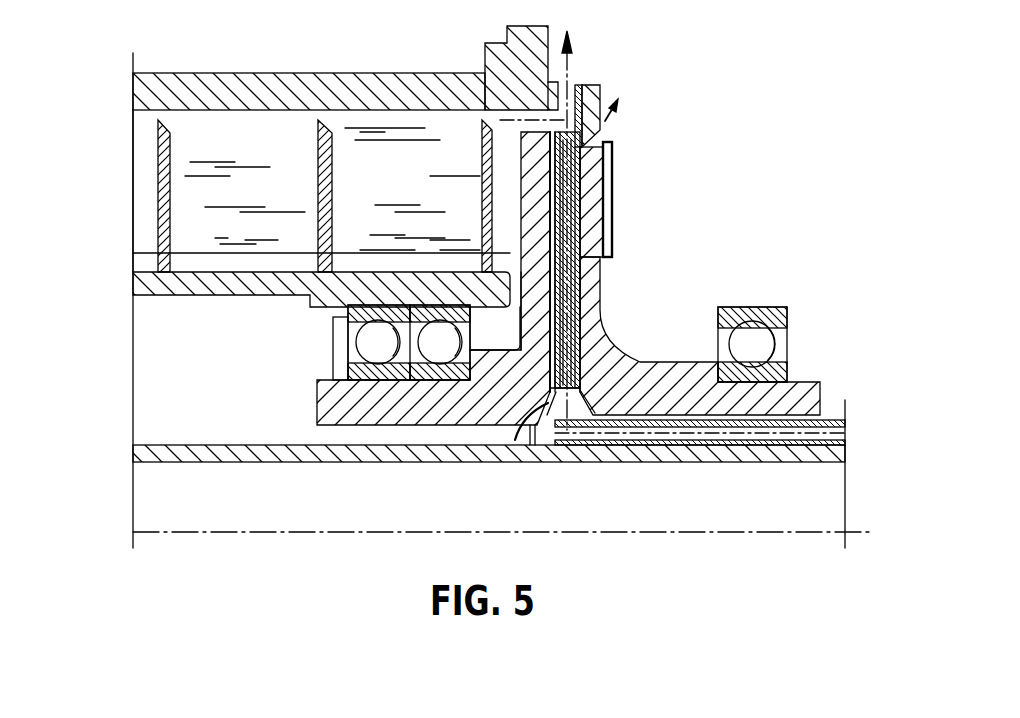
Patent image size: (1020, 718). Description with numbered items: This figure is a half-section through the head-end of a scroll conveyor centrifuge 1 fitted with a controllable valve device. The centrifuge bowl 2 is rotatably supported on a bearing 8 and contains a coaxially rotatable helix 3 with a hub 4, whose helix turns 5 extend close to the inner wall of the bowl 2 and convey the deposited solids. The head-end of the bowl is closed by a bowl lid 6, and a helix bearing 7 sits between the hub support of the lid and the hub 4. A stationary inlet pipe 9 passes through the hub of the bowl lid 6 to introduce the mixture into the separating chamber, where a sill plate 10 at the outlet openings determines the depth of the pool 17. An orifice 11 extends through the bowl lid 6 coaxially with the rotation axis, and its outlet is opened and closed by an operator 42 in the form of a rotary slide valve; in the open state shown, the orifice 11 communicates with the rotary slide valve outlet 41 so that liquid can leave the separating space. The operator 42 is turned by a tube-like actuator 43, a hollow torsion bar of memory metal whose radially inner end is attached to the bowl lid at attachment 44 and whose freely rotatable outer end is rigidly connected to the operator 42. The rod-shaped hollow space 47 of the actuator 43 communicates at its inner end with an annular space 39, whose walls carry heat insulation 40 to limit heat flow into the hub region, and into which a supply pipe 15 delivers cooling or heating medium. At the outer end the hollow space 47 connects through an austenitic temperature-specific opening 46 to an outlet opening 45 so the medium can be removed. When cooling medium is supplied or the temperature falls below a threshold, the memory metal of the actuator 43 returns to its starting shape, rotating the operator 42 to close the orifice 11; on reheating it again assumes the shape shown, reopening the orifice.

The scroll conveyor centrifuge 1 is at (743, 194).
The centrifuge bowl 2 is at (366, 83).
The helix 3 is at (157, 187).
The hub 4 is at (155, 282).
The helix turns 5 is at (165, 230).
The bowl lid 6 is at (683, 375).
The helix bearing 7 is at (370, 340).
The bearing 8 is at (765, 347).
The inlet pipe 9 is at (822, 455).
The sill plate 10 is at (608, 196).
The orifice 11 is at (521, 108).
The supply pipe 15 is at (822, 432).
The pool 17 is at (393, 187).
The annular space 39 is at (548, 408).
The heat insulation 40 is at (525, 433).
The rotary slide valve outlet 41 is at (574, 86).
The operator 42 is at (592, 97).
The actuator 43 is at (582, 275).
The attachment to bowl lid 44 is at (607, 345).
The outlet opening 45 is at (583, 150).
The austenitic temperature-specific opening 46 is at (580, 162).
The hollow space 47 is at (580, 237).